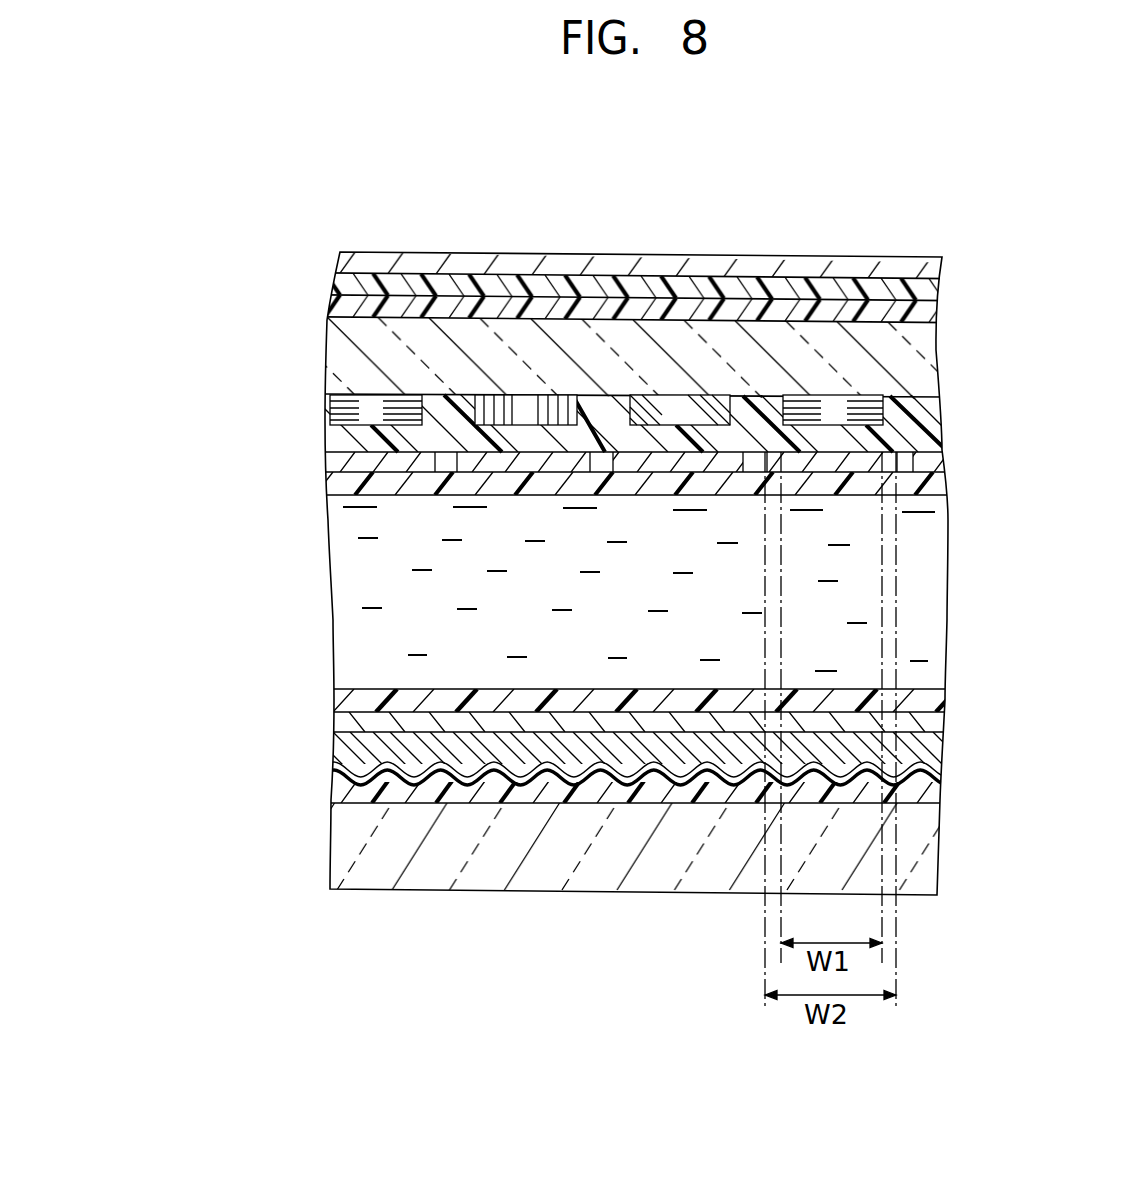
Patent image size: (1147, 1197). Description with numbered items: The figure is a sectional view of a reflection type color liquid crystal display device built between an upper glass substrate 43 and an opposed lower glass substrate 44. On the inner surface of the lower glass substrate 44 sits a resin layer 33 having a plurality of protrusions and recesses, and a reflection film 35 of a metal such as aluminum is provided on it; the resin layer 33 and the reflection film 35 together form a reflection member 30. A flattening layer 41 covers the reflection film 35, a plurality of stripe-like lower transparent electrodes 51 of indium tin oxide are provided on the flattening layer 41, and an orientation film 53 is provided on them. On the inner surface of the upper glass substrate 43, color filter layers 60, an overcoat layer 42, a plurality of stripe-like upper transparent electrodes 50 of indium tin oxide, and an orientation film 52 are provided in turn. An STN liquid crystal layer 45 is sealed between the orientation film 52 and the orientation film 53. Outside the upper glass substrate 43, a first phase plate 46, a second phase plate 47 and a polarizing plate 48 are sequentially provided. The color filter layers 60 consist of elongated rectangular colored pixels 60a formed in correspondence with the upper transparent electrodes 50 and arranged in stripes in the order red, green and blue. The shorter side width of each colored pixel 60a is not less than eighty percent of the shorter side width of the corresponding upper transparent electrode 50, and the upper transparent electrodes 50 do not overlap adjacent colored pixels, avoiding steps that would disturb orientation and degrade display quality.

The reflection member 30 is at (252, 766).
The resin layer 33 is at (337, 793).
The reflection film 35 is at (325, 772).
The flattening layer 41 is at (328, 748).
The overcoat layer 42 is at (350, 437).
The upper glass substrate 43 is at (367, 353).
The lower glass substrate 44 is at (355, 860).
The STN liquid crystal layer 45 is at (367, 577).
The first phase plate 46 is at (925, 315).
The second phase plate 47 is at (925, 292).
The polarizing plate 48 is at (925, 270).
The upper transparent electrodes 50 is at (345, 462).
The lower transparent electrodes 51 is at (347, 718).
The orientation film 52 is at (347, 480).
The orientation film 53 is at (333, 702).
The color filter layers 60 is at (553, 302).
The colored pixels 60a is at (550, 398).